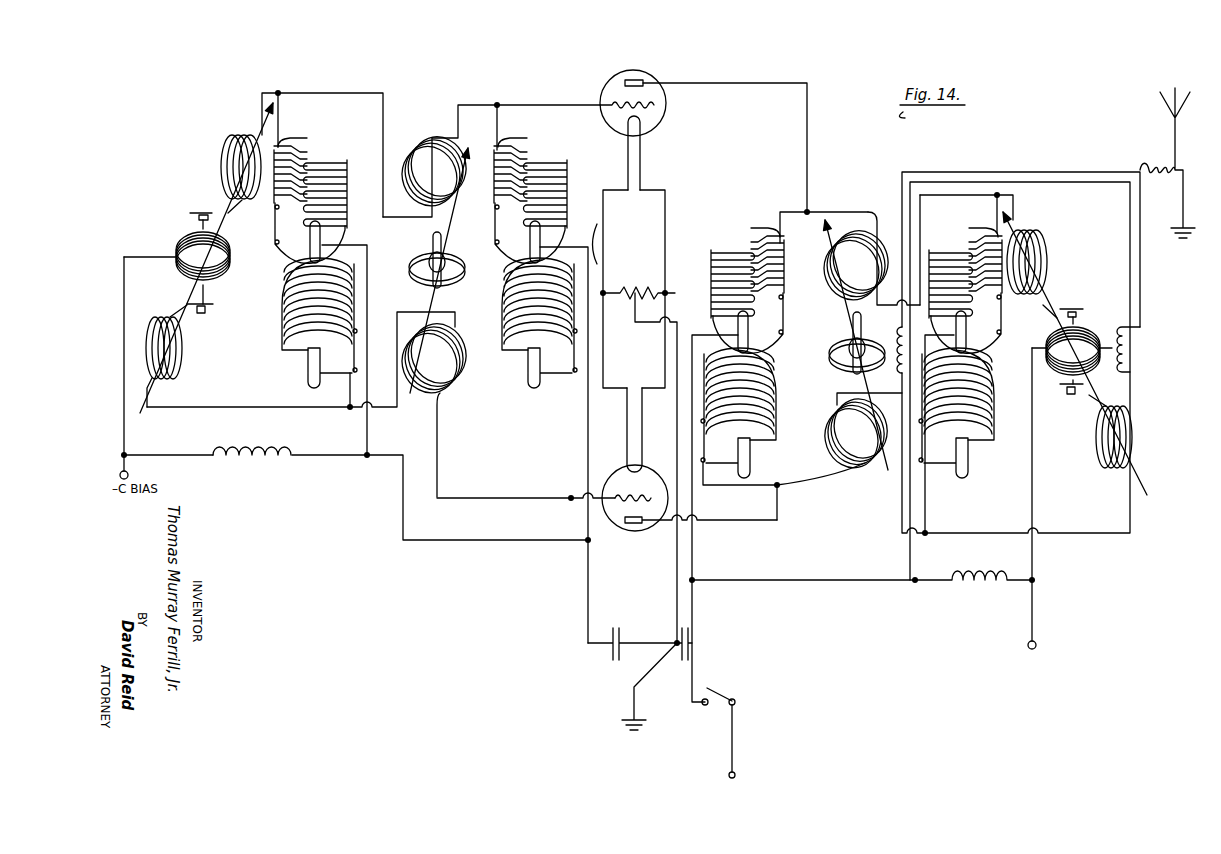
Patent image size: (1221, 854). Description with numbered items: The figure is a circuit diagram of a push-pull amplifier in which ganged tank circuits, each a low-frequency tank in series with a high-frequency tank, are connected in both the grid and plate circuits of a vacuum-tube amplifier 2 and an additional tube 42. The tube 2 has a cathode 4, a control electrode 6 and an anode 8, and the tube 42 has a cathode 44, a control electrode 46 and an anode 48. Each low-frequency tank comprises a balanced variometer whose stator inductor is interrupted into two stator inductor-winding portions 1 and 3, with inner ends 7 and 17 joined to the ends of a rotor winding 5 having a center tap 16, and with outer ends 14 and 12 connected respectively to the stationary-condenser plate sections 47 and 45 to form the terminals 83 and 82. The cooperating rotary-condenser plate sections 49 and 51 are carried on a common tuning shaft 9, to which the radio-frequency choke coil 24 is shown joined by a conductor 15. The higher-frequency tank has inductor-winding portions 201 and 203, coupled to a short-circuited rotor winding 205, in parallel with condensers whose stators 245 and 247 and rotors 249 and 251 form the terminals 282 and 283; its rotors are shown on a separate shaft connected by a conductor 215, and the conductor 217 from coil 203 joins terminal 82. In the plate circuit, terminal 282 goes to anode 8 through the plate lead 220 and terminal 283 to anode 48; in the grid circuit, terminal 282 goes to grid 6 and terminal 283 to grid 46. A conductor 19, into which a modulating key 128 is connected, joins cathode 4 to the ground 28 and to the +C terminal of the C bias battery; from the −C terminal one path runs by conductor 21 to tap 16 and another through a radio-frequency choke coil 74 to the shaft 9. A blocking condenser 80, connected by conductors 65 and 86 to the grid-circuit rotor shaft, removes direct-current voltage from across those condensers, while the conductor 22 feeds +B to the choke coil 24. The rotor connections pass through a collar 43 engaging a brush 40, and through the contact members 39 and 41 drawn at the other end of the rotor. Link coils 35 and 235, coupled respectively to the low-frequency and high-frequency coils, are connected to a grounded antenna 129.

The stator inductor-winding portion 1 is at (183, 362).
The vacuum-tube amplifier 2 is at (660, 132).
The stator inductor-winding portion 3 is at (225, 148).
The cathode 4 is at (640, 118).
The rotor winding 5 is at (233, 253).
The control electrode 6 is at (670, 98).
The inner end 7 is at (171, 308).
The anode 8 is at (643, 82).
The tuning shaft 9 is at (310, 248).
The outer end 12 is at (262, 122).
The outer end 14 is at (217, 403).
The conductor 15 is at (367, 297).
The center tap 16 is at (177, 253).
The inner end 17 is at (234, 211).
The conductor 19 is at (673, 318).
The conductor 21 is at (127, 293).
The conductor 22 is at (1037, 613).
The radio-frequency choke coil 24 is at (977, 592).
The ground 28 is at (620, 733).
The link coil 35 is at (1145, 347).
The condenser plate 39 is at (215, 212).
The brush 40 is at (214, 303).
The condenser 41 is at (192, 218).
The additional tube 42 is at (650, 470).
The collar 43 is at (210, 313).
The cathode 44 is at (627, 472).
The stationary-condenser plate section 45 is at (297, 137).
The control electrode 46 is at (622, 500).
The stationary-condenser plate section 47 is at (330, 372).
The anode 48 is at (636, 523).
The rotary-condenser plate section 49 is at (337, 173).
The rotary-condenser plate section 51 is at (292, 345).
The conductor 65 is at (587, 593).
The radio-frequency choke coil 74 is at (262, 473).
The blocking condenser 80 is at (610, 648).
The terminal 82 is at (280, 92).
The terminal 83 is at (350, 409).
The conductor 86 is at (462, 543).
The modulating key 128 is at (727, 690).
The antenna 129 is at (1160, 103).
The inductor-winding portion 201 is at (467, 368).
The inductor-winding portion 203 is at (415, 160).
The rotor winding 205 is at (410, 258).
The conductor 215 is at (602, 224).
The conductor 217 is at (400, 222).
The conductor 220 is at (747, 80).
The link coil 235 is at (892, 336).
The stator 245 is at (520, 143).
The stator 247 is at (562, 373).
The rotor 249 is at (553, 177).
The rotor 251 is at (508, 282).
The terminal 282 is at (498, 104).
The terminal 283 is at (571, 500).